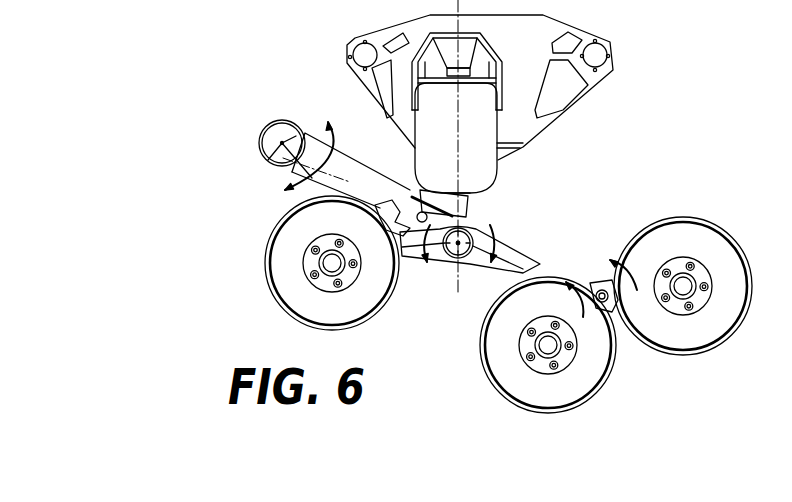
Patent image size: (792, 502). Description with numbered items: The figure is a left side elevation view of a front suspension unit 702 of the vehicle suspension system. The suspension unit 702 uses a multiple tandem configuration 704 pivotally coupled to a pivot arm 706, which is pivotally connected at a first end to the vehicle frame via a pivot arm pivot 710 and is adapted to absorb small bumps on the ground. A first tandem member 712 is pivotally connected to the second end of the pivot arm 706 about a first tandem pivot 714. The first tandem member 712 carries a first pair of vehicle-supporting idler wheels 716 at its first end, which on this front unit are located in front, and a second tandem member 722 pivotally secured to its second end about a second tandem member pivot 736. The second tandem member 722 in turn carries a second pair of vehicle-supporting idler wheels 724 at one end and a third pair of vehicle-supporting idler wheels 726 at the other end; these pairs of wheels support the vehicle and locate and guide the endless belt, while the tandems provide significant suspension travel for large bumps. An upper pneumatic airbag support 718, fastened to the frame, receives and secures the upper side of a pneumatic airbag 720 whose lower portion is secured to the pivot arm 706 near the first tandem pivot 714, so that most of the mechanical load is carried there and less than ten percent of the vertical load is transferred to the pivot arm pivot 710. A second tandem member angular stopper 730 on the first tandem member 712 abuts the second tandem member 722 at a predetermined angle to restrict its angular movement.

The suspension unit 702 is at (687, 122).
The multiple tandem configuration 704 is at (452, 375).
The pivot arm 706 is at (358, 182).
The pivot arm pivot 710 is at (262, 155).
The first tandem member 712 is at (513, 247).
The first tandem pivot 714 is at (450, 253).
The first pair of vehicle-supporting idler wheels 716 is at (248, 317).
The upper pneumatic airbag support 718 is at (447, 53).
The pneumatic airbag 720 is at (452, 147).
The second tandem member 722 is at (613, 320).
The second pair of vehicle-supporting idler wheels 724 is at (607, 395).
The third pair of vehicle-supporting idler wheels 726 is at (713, 207).
The second tandem member angular stopper 730 is at (540, 270).
The second tandem member pivot 736 is at (600, 280).